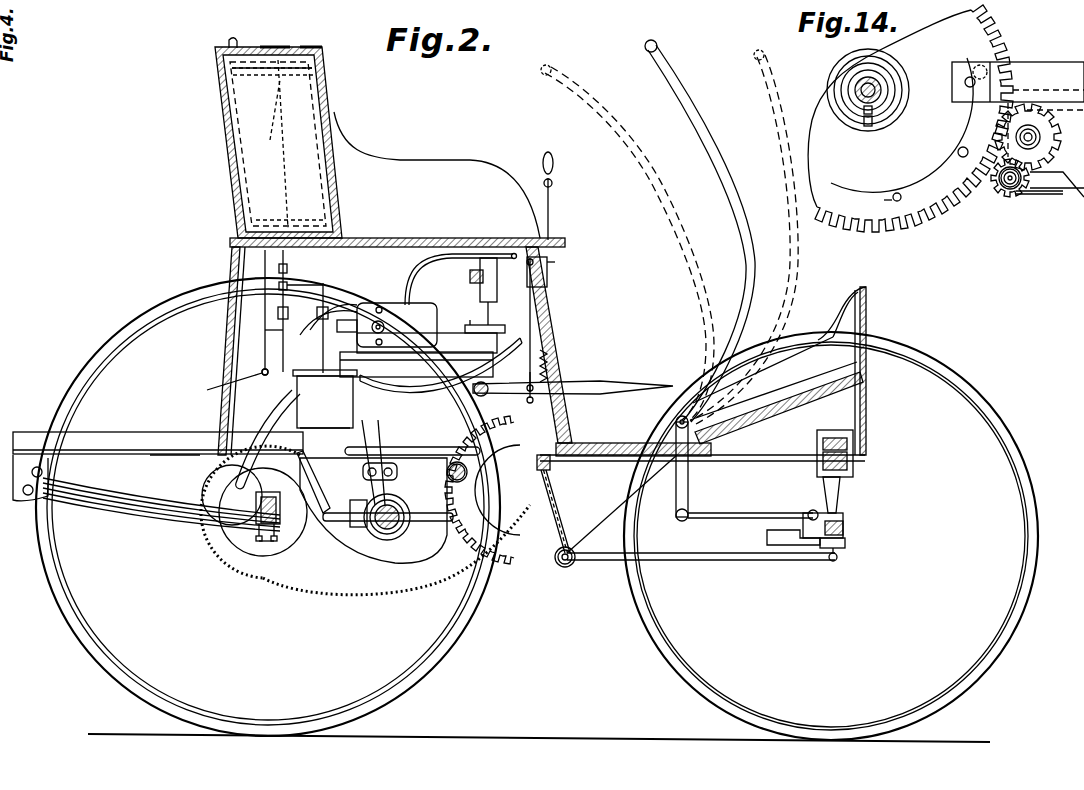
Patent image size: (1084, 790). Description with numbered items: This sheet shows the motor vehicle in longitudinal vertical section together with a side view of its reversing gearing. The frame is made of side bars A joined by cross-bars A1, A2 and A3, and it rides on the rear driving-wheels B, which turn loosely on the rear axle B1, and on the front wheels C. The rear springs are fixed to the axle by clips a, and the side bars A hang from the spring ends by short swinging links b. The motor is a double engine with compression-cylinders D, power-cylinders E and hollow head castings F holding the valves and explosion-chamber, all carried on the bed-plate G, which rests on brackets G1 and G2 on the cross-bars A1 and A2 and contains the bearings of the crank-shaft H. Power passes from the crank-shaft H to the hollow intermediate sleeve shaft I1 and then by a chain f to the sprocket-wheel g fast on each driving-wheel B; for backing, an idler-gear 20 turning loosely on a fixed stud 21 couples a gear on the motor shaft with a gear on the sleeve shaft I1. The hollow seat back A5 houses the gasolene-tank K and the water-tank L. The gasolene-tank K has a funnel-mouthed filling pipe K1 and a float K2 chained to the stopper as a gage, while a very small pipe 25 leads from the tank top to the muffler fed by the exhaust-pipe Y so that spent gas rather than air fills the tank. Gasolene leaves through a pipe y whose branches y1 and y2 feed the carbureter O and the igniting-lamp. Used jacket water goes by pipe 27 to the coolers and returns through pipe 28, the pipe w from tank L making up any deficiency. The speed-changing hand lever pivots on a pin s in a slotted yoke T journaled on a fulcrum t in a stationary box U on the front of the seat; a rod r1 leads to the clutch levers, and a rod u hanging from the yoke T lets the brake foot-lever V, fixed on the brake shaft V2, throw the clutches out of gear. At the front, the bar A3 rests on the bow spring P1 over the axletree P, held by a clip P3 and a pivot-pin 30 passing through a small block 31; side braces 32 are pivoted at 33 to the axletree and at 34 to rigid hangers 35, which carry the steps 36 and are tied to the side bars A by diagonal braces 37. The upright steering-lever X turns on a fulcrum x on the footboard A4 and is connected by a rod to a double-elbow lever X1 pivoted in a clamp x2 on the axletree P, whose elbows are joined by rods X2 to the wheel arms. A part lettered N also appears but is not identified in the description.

In FIG. 2, the side bars A is at (140, 428).
In FIG. 2, the cross-bar A1 is at (242, 494).
In FIG. 2, the cross-bar A2 is at (551, 467).
In FIG. 2, the front cross-bar A3 is at (842, 371).
In FIG. 2, the footboard A4 is at (608, 443).
In FIG. 2, the seat back A5 is at (435, 166).
In FIG. 2, the driving-wheels B is at (268, 507).
In FIG. 2, the rear axle B1 is at (263, 565).
In FIG. 2, the front wheels C is at (831, 536).
In FIG. 2, the compression-cylinders D is at (413, 383).
In FIG. 2, the power-cylinders E is at (400, 462).
In FIG. 2, the hollow castings F is at (398, 340).
In FIG. 2, the bed-plate G is at (376, 510).
In FIG. 2, the bracket G1 is at (347, 482).
In FIG. 2, the engine-bracket G2 is at (482, 490).
In FIG. 2, the crank-shaft H is at (390, 530).
In FIG. 14, the crank-shaft H is at (1000, 184).
In FIG. 14, the intermediate sleeve shaft I1 is at (873, 77).
In FIG. 2, the gasolene-tank K is at (305, 90).
In FIG. 2, the funnel-mouthed pipe K1 is at (277, 36).
In FIG. 2, the float K2 is at (306, 56).
In FIG. 2, the water-tank L is at (278, 138).
In FIG. 14, the water-tank L is at (877, 98).
In FIG. 2, the spring hanger bar N is at (173, 484).
In FIG. 2, the carbureter O is at (325, 399).
In FIG. 2, the axletree P is at (845, 532).
In FIG. 2, the spring P1 is at (840, 480).
In FIG. 2, the clip P3 is at (854, 472).
In FIG. 2, the slotted yoke T is at (500, 291).
In FIG. 2, the stationary box U is at (554, 272).
In FIG. 2, the foot-lever V is at (573, 379).
In FIG. 2, the brake shaft V2 is at (528, 401).
In FIG. 2, the steering-lever X is at (728, 186).
In FIG. 2, the double-elbow lever X1 is at (803, 540).
In FIG. 2, the rods X2 is at (766, 534).
In FIG. 2, the exhaust-pipe Y is at (251, 516).
In FIG. 2, the clips a is at (258, 530).
In FIG. 2, the swinging links b is at (25, 489).
In FIG. 2, the chain f is at (224, 562).
In FIG. 2, the sprocket-wheel g is at (292, 565).
In FIG. 2, the connecting-rod r1 is at (488, 318).
In FIG. 2, the pin s is at (551, 200).
In FIG. 2, the fulcrum-pivot t is at (470, 278).
In FIG. 2, the rod u is at (545, 337).
In FIG. 2, the pipe w is at (265, 337).
In FIG. 2, the fulcrum x is at (690, 422).
In FIG. 2, the clamp x2 is at (838, 558).
In FIG. 2, the pipe y is at (289, 311).
In FIG. 2, the branch y1 is at (314, 327).
In FIG. 2, the branch y2 is at (287, 330).
In FIG. 14, the idler-gear 20 is at (1045, 150).
In FIG. 14, the fixed stud 21 is at (1030, 150).
In FIG. 2, the small pipe 25 is at (233, 367).
In FIG. 2, the pipe 27 is at (457, 255).
In FIG. 2, the pipe 28 is at (221, 388).
In FIG. 2, the pivot-pin 30 is at (820, 448).
In FIG. 2, the block 31 is at (826, 440).
In FIG. 2, the side braces 32 is at (714, 562).
In FIG. 2, the pivot 33 is at (833, 562).
In FIG. 2, the pivot 34 is at (565, 565).
In FIG. 2, the hangers 35 is at (561, 511).
In FIG. 2, the steps 36 is at (556, 555).
In FIG. 2, the diagonal braces 37 is at (622, 504).